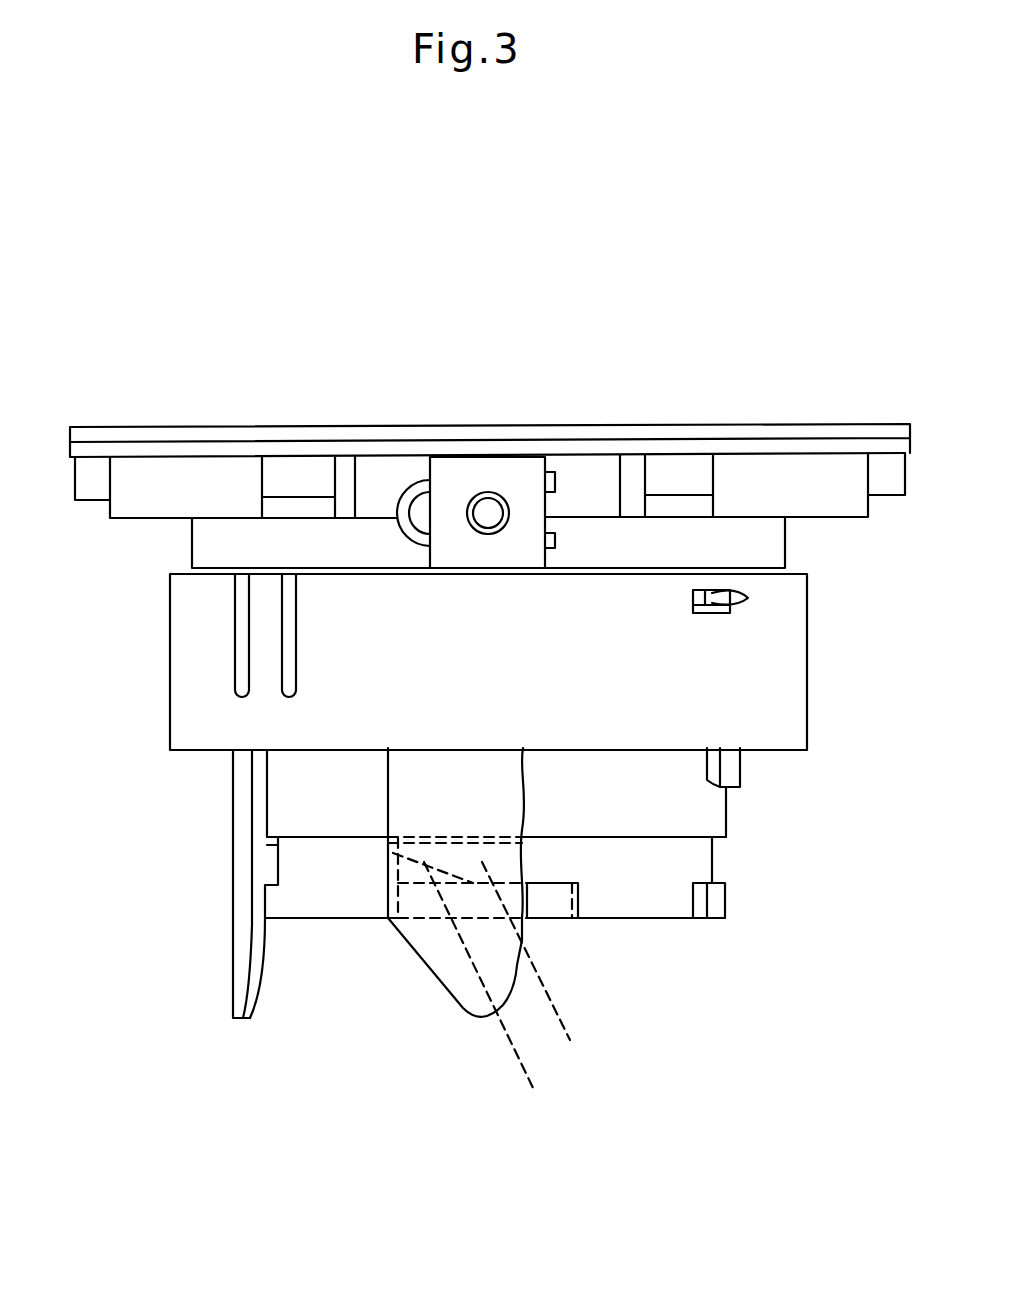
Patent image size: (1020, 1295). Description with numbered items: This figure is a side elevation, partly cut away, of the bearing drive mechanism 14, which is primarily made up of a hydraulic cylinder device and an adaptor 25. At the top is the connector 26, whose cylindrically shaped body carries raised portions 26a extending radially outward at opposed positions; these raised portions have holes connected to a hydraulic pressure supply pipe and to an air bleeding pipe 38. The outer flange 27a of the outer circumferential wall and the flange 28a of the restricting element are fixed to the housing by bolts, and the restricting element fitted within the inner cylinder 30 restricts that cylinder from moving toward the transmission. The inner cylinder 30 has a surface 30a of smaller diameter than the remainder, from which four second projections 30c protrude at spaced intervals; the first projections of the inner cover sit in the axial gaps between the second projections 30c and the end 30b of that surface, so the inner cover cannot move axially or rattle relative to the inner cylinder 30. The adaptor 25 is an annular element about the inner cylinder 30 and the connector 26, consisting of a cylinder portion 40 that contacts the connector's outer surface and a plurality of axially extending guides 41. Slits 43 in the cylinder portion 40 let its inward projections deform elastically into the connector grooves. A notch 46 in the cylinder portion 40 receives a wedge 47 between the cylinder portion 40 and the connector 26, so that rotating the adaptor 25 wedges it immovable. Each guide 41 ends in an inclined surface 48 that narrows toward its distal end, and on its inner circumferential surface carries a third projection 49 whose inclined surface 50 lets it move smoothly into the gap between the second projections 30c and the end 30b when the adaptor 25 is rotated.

The bearing drive mechanism 14 is at (716, 389).
The adaptor 25 is at (177, 788).
The connector 26 is at (190, 547).
The raised portions 26a is at (508, 472).
The outer flange 27a is at (583, 447).
The flange 28a is at (772, 432).
The inner cylinder 30 is at (732, 802).
The surface 30a is at (667, 867).
The end 30b is at (617, 840).
The second projections 30c is at (547, 907).
The air bleeding pipe 38 is at (470, 497).
The cylinder portion 40 is at (193, 703).
The guides 41 is at (242, 957).
The slits 43 is at (282, 622).
The notch 46 is at (746, 600).
The wedge 47 is at (732, 590).
The inclined surface 48 is at (250, 993).
The third projections 49 is at (268, 867).
The inclined surfaces 50 is at (492, 1003).